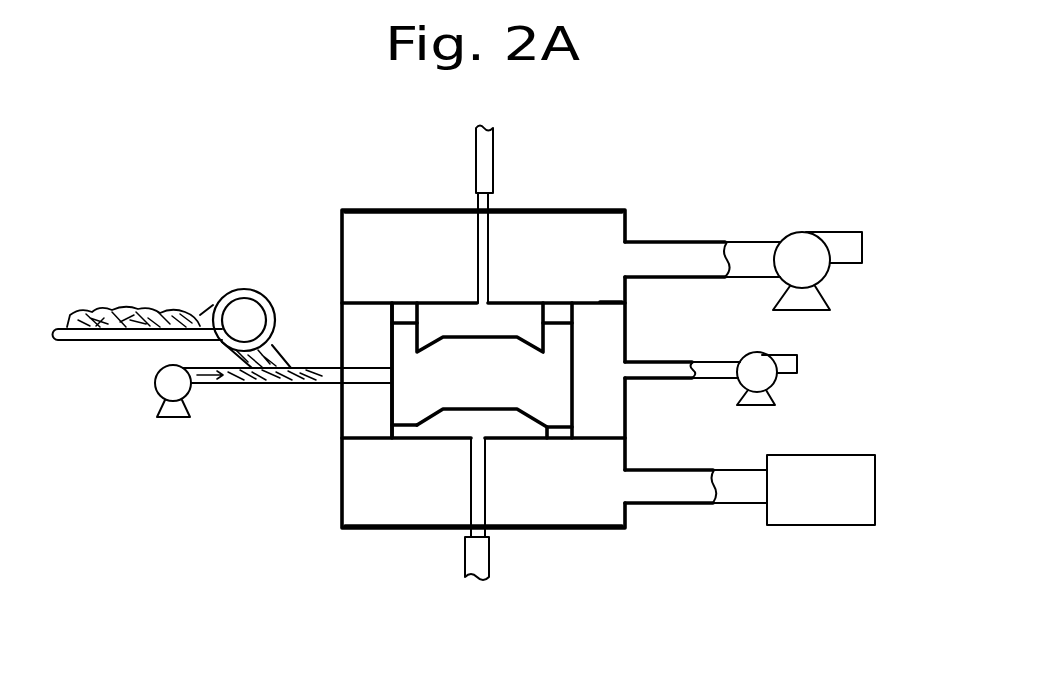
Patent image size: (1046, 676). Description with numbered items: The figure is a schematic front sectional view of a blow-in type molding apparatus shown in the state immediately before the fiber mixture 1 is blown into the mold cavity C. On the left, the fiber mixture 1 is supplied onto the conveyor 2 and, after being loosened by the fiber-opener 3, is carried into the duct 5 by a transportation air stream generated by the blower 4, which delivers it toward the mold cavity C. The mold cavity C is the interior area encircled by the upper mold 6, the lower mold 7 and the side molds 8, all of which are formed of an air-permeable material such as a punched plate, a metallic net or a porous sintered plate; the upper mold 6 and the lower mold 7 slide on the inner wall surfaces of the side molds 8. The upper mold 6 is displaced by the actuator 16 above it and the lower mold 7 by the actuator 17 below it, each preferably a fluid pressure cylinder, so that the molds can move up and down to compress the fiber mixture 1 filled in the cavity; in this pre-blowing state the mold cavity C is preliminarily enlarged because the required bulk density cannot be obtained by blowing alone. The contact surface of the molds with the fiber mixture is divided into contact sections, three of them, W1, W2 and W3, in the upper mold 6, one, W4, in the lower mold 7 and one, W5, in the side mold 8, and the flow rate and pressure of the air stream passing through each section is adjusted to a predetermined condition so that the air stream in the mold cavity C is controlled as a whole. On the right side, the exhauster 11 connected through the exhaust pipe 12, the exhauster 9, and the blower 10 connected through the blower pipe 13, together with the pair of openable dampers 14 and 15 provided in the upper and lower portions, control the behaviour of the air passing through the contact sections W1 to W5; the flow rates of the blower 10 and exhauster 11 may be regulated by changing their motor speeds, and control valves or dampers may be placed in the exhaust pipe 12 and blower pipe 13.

The fiber mixture 1 is at (145, 307).
The conveyor 2 is at (120, 343).
The fiber-opener 3 is at (243, 311).
The blower 4 is at (175, 397).
The duct 5 is at (270, 381).
The upper mold 6 is at (510, 336).
The lower mold 7 is at (461, 408).
The side molds 8 is at (388, 342).
The exhauster 9 is at (767, 373).
The blower 10 is at (820, 495).
The exhauster 11 is at (795, 243).
The exhaust pipe 12 is at (680, 255).
The blower pipe 13 is at (680, 492).
The openable damper 14 is at (362, 299).
The openable damper 15 is at (357, 441).
The actuator 16 is at (485, 162).
The actuator 17 is at (475, 552).
The contact section W1 is at (405, 301).
The contact section W2 is at (490, 332).
The contact section W3 is at (555, 304).
The contact section W4 is at (512, 415).
The contact section W5 is at (577, 399).
The mold cavity C is at (548, 378).